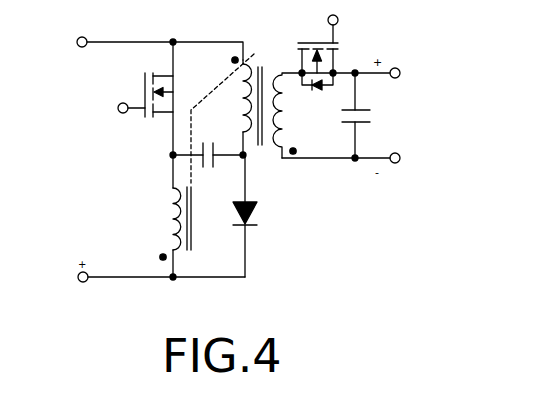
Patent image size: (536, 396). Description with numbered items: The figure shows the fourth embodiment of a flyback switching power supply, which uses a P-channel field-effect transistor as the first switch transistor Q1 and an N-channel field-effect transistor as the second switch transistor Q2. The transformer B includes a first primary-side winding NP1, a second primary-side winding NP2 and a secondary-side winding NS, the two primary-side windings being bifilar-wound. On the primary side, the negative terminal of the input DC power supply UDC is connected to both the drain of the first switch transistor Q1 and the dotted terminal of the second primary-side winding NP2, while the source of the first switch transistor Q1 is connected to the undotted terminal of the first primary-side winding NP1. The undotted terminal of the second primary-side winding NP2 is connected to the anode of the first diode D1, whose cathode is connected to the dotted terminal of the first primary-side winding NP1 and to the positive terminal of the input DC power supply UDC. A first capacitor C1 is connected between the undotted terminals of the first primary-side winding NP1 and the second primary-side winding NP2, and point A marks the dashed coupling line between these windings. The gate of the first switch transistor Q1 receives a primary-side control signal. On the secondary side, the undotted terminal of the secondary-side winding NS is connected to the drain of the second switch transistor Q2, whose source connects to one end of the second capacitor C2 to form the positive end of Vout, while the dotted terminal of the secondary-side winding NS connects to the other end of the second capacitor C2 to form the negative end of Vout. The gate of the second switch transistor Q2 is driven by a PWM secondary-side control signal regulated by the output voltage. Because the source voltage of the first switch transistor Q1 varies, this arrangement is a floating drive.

The first switch transistor Q1 is at (145, 102).
The second switch transistor Q2 is at (326, 52).
The first capacitor C1 is at (208, 163).
The second capacitor C2 is at (358, 115).
The first diode D1 is at (254, 216).
The first primary-side winding NP1 is at (169, 223).
The second primary-side winding NP2 is at (240, 101).
The secondary-side winding NS is at (287, 115).
The node A is at (255, 48).
The transformer B is at (257, 144).
The input DC power supply UDC is at (73, 156).
The output voltage Vout is at (388, 118).